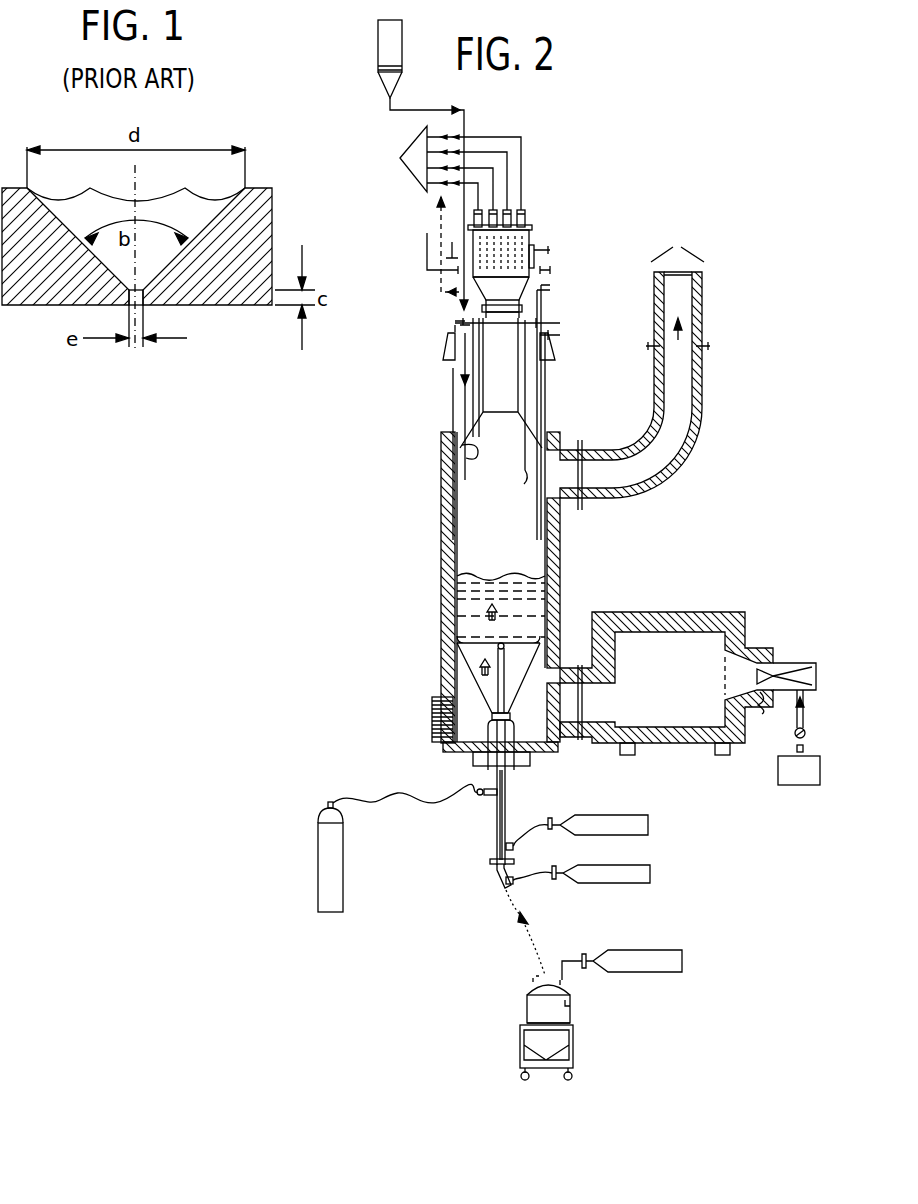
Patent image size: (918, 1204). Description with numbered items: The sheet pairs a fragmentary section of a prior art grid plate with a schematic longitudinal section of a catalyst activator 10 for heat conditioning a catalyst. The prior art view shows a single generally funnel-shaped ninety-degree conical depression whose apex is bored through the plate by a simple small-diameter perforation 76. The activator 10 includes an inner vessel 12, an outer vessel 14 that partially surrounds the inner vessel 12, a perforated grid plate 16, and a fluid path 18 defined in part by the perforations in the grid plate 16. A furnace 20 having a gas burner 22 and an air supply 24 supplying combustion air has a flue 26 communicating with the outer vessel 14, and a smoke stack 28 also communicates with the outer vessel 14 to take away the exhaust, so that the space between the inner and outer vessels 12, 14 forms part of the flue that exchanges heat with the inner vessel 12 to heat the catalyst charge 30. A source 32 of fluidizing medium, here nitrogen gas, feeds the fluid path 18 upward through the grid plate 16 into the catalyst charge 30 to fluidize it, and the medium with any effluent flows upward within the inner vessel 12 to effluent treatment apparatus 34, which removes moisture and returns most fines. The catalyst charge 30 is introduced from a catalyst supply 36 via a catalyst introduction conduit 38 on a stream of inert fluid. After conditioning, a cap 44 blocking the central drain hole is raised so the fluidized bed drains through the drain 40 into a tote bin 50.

In FIG. 1, the perforation 76 is at (128, 297).
The catalyst activator 10 is at (376, 558).
The inner vessel 12 is at (458, 580).
The outer vessel 14 is at (440, 545).
The perforated grid plate 16 is at (480, 640).
The fluid path 18 is at (476, 663).
The furnace 20 is at (696, 670).
The gas burner 22 is at (775, 668).
The air supply 24 is at (811, 782).
The flue 26 is at (568, 720).
The smoke stack 28 is at (703, 420).
The catalyst charge 30 is at (528, 602).
The source of fluidizing medium 32 is at (318, 848).
In FIG. 2, the effluent treatment apparatus 34 is at (531, 242).
In FIG. 2, the catalyst supply 36 is at (373, 42).
The catalyst introduction conduit 38 is at (442, 443).
The drain 40 is at (498, 683).
The cap 44 is at (518, 642).
The tote bin 50 is at (572, 1015).